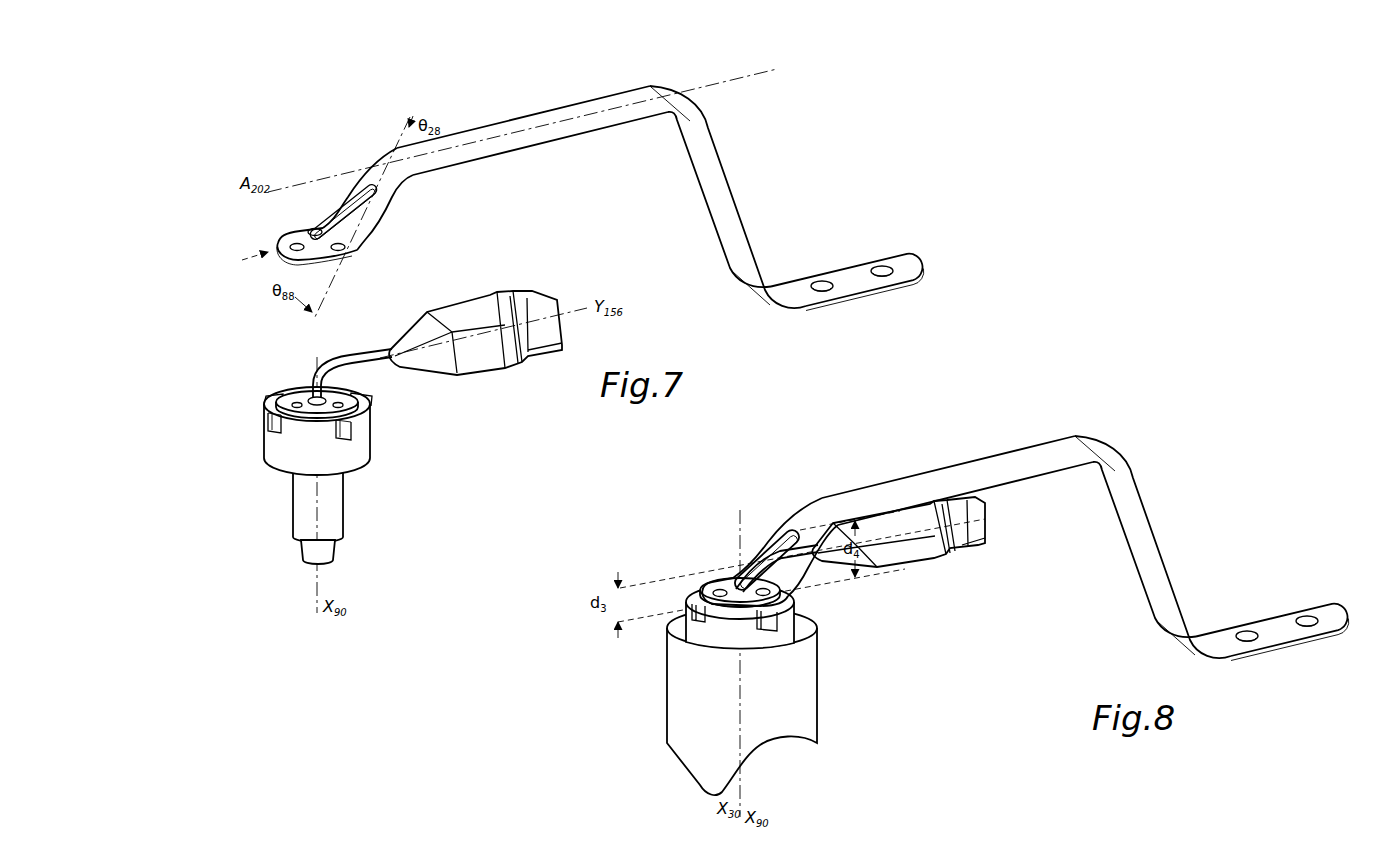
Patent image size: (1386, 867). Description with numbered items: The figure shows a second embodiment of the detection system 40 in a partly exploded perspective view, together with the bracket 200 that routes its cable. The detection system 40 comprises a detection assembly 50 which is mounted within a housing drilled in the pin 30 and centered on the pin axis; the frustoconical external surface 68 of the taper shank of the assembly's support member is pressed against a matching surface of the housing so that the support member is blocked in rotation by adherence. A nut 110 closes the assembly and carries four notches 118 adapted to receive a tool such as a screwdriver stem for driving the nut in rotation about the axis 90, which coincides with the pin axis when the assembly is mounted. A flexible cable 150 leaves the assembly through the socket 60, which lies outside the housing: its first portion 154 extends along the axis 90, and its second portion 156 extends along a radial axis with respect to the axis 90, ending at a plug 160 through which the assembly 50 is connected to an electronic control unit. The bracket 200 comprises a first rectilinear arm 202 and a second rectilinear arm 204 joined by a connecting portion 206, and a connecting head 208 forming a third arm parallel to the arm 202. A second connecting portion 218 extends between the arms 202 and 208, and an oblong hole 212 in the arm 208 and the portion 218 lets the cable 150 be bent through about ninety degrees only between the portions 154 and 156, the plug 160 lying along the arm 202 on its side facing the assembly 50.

In FIG. 8, the pin 30 is at (690, 707).
In FIG. 7, the detection system 40 is at (205, 160).
In FIG. 7, the detection assembly 50 is at (355, 508).
In FIG. 7, the socket 60 is at (298, 392).
In FIG. 8, the socket 60 is at (727, 572).
In FIG. 7, the external surface 68 is at (337, 540).
In FIG. 7, the axis X90 90 is at (294, 523).
In FIG. 7, the nut 110 is at (282, 443).
In FIG. 8, the nut 110 is at (727, 630).
In FIG. 7, the notches 118 is at (352, 436).
In FIG. 7, the flexible cable 150 is at (313, 371).
In FIG. 7, the first portion of cable 154 is at (307, 408).
In FIG. 8, the first portion of cable 154 is at (747, 603).
In FIG. 7, the second portion of cable 156 is at (360, 353).
In FIG. 8, the second portion of cable 156 is at (777, 538).
In FIG. 7, the plug 160 is at (487, 347).
In FIG. 8, the plug 160 is at (895, 563).
In FIG. 7, the bracket 200 is at (724, 158).
In FIG. 8, the bracket 200 is at (1150, 505).
In FIG. 7, the first rectilinear arm 202 is at (470, 140).
In FIG. 8, the first rectilinear arm 202 is at (1027, 450).
In FIG. 7, the second rectilinear arm 204 is at (855, 273).
In FIG. 8, the second rectilinear arm 204 is at (1278, 620).
In FIG. 7, the connecting portion 206 is at (713, 188).
In FIG. 8, the connecting portion 206 is at (1137, 533).
In FIG. 7, the connecting head 208 is at (300, 232).
In FIG. 8, the connecting head 208 is at (793, 597).
In FIG. 7, the oblong hole 212 is at (358, 205).
In FIG. 8, the oblong hole 212 is at (785, 547).
In FIG. 7, the second connecting portion 218 is at (372, 204).
In FIG. 8, the second connecting portion 218 is at (767, 542).